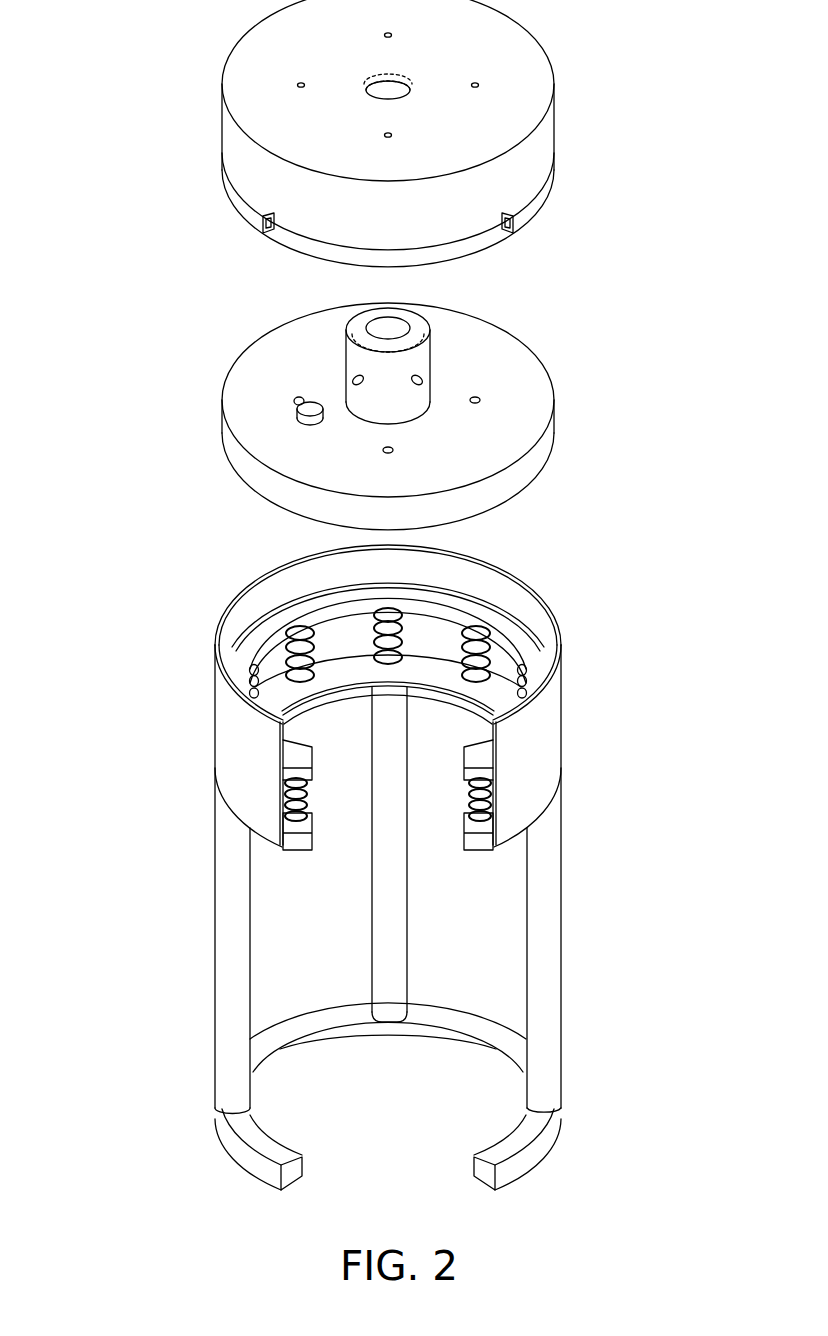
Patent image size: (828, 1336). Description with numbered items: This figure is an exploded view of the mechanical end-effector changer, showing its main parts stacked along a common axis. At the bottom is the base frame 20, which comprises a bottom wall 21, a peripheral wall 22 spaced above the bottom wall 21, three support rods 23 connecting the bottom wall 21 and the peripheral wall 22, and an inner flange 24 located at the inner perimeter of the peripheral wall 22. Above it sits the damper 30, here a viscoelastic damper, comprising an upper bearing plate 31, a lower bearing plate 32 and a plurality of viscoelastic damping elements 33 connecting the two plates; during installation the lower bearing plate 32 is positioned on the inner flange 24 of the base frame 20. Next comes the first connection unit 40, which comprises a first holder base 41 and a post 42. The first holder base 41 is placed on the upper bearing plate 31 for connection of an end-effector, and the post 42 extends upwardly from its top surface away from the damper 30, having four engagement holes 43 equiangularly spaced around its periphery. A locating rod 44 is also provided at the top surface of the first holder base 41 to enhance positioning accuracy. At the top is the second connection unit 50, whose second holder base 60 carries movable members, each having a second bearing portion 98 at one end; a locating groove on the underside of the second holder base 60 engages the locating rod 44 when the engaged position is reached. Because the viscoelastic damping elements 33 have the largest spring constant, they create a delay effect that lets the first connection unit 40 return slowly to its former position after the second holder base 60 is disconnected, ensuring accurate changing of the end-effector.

The base frame 20 is at (319, 867).
The bottom wall 21 is at (257, 782).
The peripheral wall 22 is at (350, 1096).
The support rods 23 is at (235, 945).
The inner flange 24 is at (328, 700).
The damper 30 is at (472, 713).
The upper bearing plate 31 is at (514, 628).
The lower bearing plate 32 is at (464, 795).
The viscoelastic damping elements 33 is at (478, 657).
The first connection unit 40 is at (424, 416).
The first holder base 41 is at (515, 418).
The post 42 is at (420, 362).
The engagement holes 43 is at (350, 378).
The locating rod 44 is at (303, 413).
The second connection unit 50 is at (407, 133).
The second holder base 60 is at (255, 85).
The second bearing portion 98 is at (263, 228).